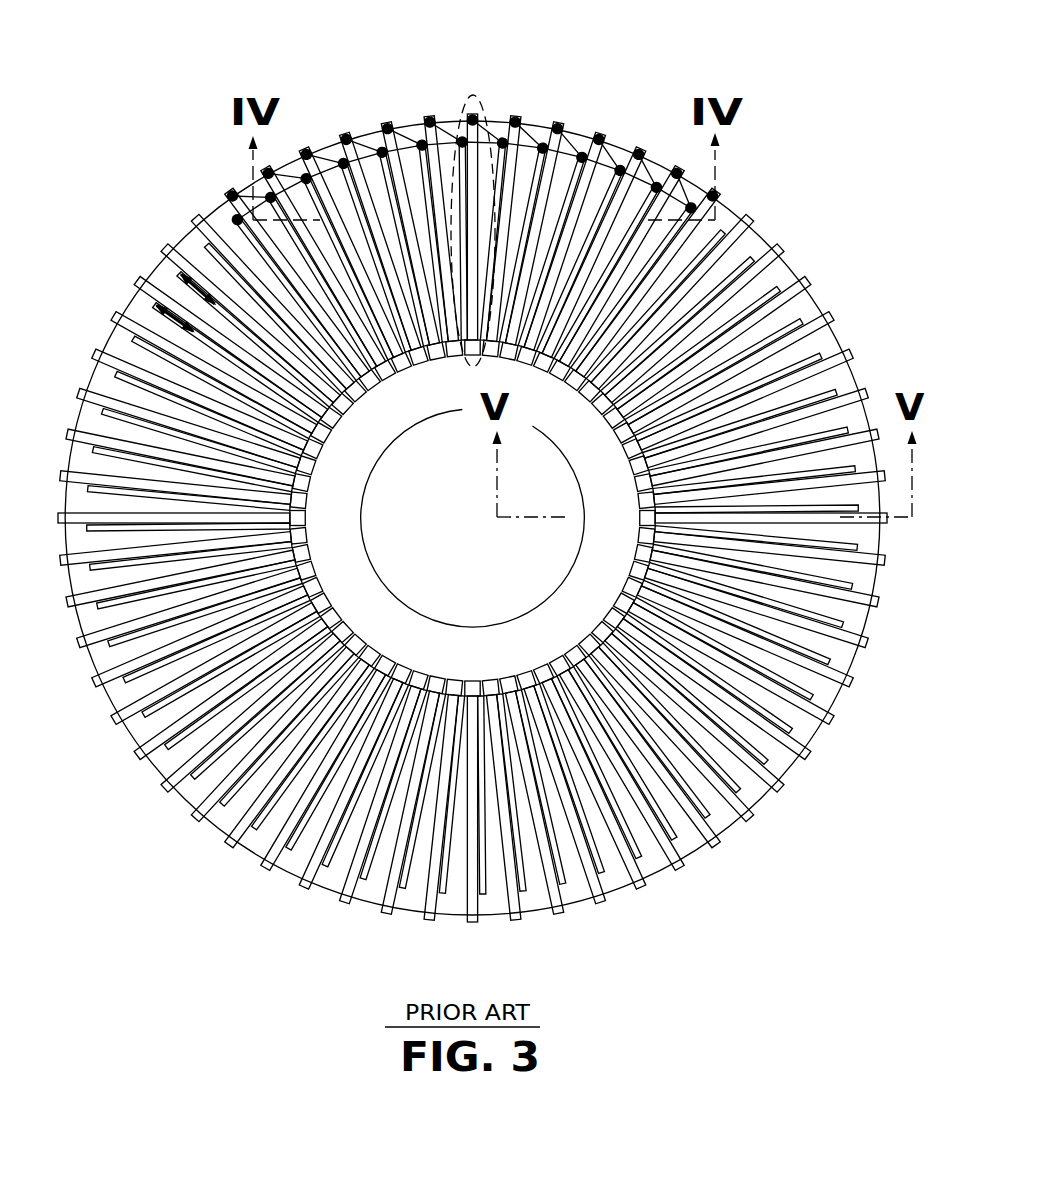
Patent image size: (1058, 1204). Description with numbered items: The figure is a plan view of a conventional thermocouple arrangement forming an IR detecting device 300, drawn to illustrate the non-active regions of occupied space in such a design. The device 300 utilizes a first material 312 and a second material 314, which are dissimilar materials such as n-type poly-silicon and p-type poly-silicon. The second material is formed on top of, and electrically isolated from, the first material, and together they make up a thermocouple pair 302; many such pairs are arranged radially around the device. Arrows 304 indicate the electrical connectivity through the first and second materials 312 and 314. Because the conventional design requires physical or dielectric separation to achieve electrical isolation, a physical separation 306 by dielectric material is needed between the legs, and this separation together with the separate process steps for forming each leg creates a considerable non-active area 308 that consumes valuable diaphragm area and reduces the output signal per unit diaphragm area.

The IR detecting device 300 is at (815, 138).
The thermocouple pair 302 is at (481, 100).
The arrows 304 is at (203, 196).
The physical separation 306 is at (725, 760).
The non-active area 308 is at (406, 629).
The first material 312 is at (768, 267).
The second material 314 is at (780, 245).